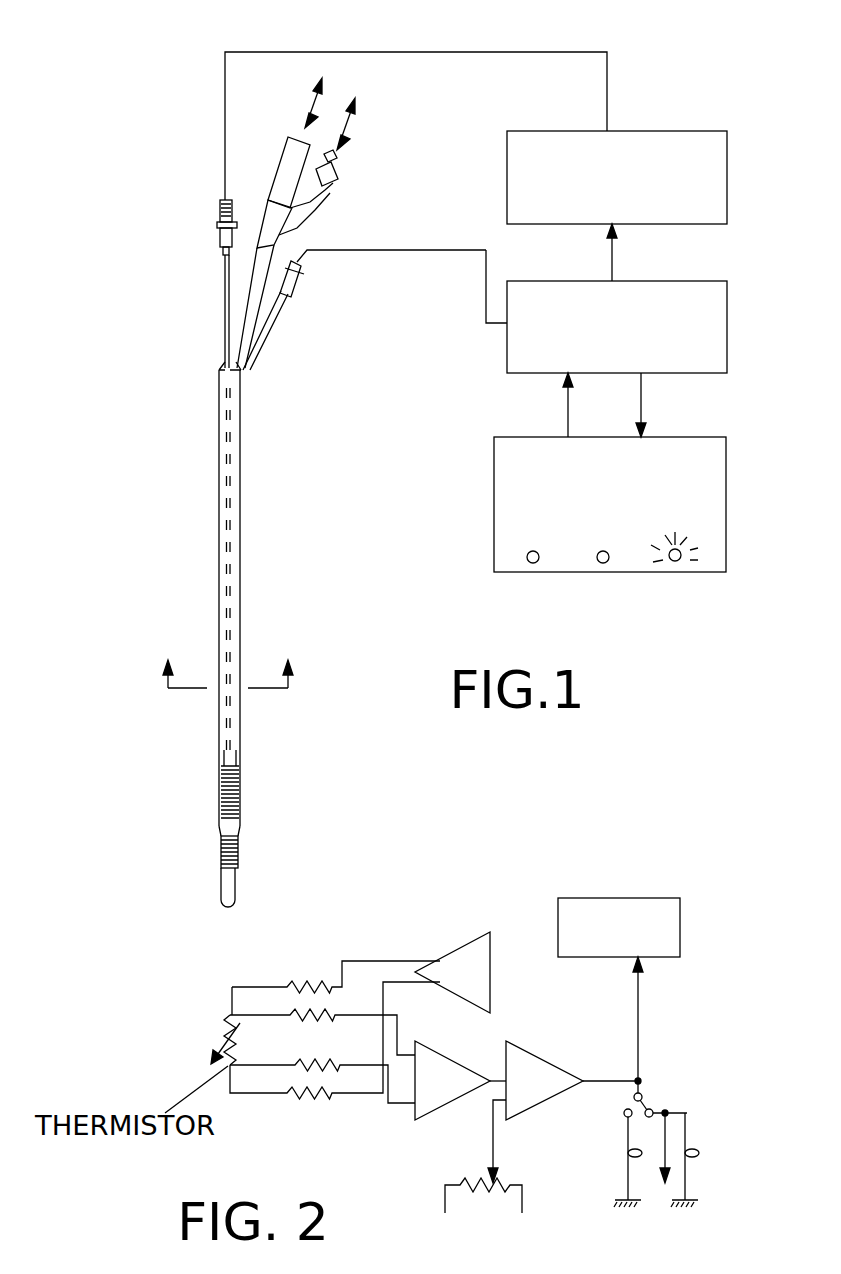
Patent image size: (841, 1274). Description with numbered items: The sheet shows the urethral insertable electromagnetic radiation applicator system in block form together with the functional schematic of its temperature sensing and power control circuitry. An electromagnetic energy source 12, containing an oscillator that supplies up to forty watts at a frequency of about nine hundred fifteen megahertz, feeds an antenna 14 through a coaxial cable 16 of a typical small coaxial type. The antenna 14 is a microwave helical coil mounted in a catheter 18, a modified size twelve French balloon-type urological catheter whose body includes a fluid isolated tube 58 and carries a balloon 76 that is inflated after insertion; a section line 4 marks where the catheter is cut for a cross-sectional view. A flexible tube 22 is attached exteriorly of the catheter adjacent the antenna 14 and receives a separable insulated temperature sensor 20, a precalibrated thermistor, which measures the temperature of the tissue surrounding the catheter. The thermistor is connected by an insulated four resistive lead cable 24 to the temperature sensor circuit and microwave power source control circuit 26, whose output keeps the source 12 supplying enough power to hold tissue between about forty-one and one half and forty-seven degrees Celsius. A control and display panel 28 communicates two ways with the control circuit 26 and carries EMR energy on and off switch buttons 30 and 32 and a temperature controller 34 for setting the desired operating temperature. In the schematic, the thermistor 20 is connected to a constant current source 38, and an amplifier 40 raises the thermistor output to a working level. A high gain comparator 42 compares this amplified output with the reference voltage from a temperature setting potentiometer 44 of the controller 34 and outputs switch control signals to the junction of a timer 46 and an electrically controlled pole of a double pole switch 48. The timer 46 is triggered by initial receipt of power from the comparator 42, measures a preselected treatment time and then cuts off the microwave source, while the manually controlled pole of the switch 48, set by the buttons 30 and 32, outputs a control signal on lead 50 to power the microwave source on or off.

In FIG. 1, the section line 4- 4 is at (228, 652).
In FIG. 1, the electromagnetic energy source 12 is at (627, 131).
In FIG. 1, the antenna 14 is at (219, 790).
In FIG. 1, the coaxial cable 16 is at (386, 52).
In FIG. 1, the catheter 18 is at (250, 727).
In FIG. 2, the temperature sensor 20 is at (230, 1015).
In FIG. 1, the flexible tube 22 is at (272, 330).
In FIG. 1, the four resistive lead cable 24 is at (345, 250).
In FIG. 2, the four resistive lead cable 24 is at (303, 978).
In FIG. 1, the temperature sensor circuit and microwave power source control circuit 26 is at (538, 373).
In FIG. 1, the control and display panel 28 is at (663, 437).
In FIG. 1, the on switch button 30 is at (530, 563).
In FIG. 1, the off switch button 32 is at (600, 563).
In FIG. 1, the temperature controller 34 is at (672, 562).
In FIG. 2, the constant current source 38 is at (463, 932).
In FIG. 2, the amplifier 40 is at (415, 1120).
In FIG. 2, the high gain comparator 42 is at (543, 1053).
In FIG. 2, the temperature setting potentiometer 44 is at (493, 1190).
In FIG. 2, the timer 46 is at (592, 898).
In FIG. 2, the double pole switch 48 is at (660, 1088).
In FIG. 2, the lead 50 is at (690, 1150).
In FIG. 1, the fluid isolated tube 58 is at (219, 378).
In FIG. 1, the balloon 76 is at (238, 848).